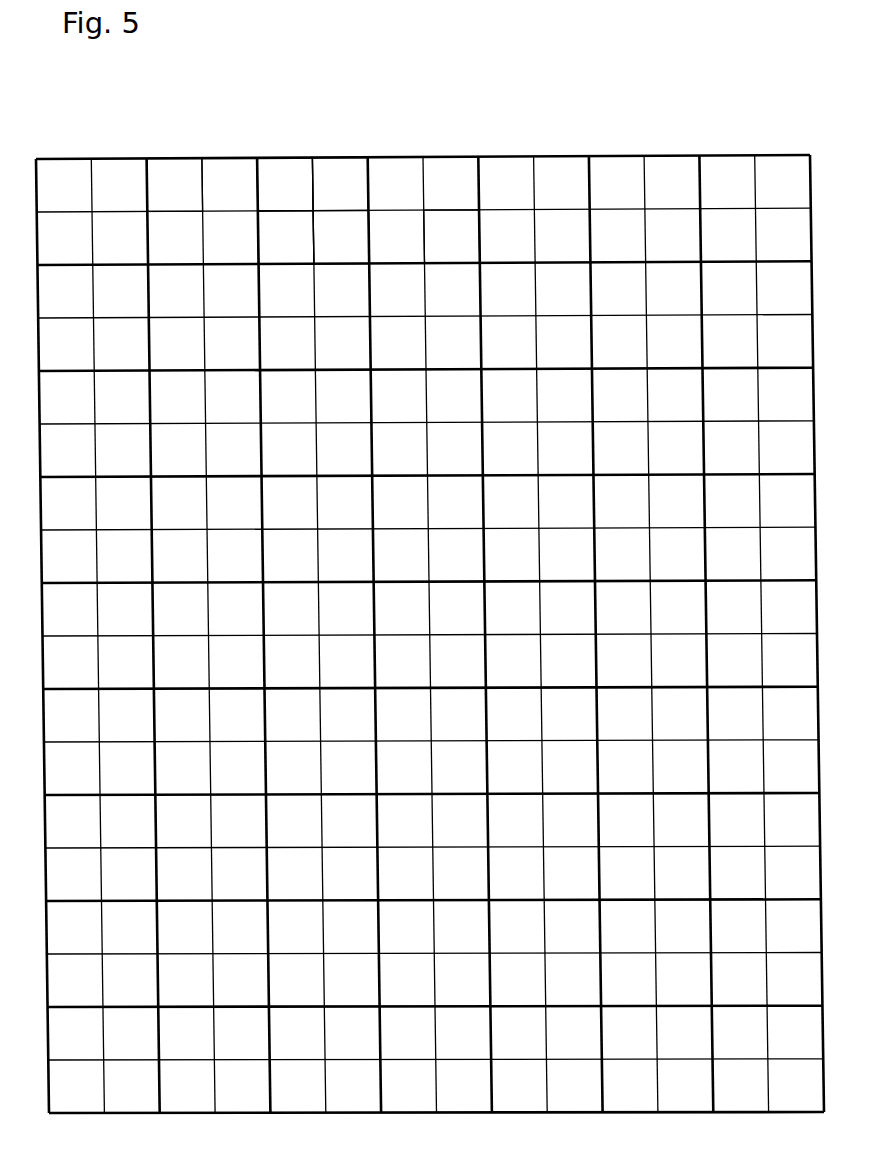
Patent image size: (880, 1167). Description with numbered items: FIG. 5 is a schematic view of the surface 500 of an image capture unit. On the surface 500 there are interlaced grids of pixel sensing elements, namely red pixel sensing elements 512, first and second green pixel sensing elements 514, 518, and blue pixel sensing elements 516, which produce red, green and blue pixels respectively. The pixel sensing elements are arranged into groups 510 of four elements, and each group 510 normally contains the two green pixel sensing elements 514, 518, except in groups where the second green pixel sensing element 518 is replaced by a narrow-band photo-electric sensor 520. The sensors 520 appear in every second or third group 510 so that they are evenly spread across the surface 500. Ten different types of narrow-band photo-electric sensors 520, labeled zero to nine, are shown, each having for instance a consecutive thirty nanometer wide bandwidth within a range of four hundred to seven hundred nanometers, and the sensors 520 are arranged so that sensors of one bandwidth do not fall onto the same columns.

The surface of the image capture unit 500 is at (108, 97).
The group of four pixel sensing elements 510 is at (182, 140).
The red pixel sensing element 512 is at (286, 140).
The first green pixel sensing element 514 is at (350, 140).
The blue pixel sensing element 516 is at (303, 151).
The second green pixel sensing element 518 is at (366, 151).
The narrow-band photo-electric sensor 520 is at (476, 151).